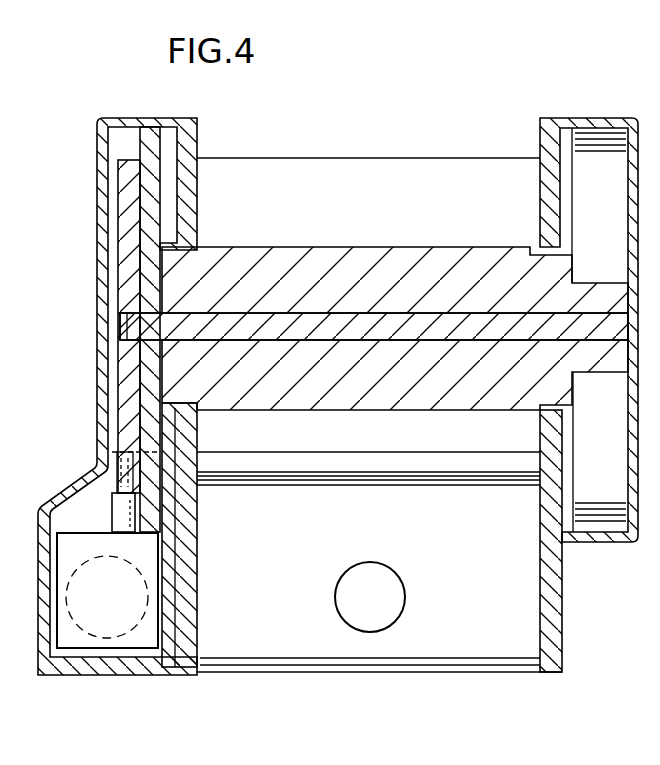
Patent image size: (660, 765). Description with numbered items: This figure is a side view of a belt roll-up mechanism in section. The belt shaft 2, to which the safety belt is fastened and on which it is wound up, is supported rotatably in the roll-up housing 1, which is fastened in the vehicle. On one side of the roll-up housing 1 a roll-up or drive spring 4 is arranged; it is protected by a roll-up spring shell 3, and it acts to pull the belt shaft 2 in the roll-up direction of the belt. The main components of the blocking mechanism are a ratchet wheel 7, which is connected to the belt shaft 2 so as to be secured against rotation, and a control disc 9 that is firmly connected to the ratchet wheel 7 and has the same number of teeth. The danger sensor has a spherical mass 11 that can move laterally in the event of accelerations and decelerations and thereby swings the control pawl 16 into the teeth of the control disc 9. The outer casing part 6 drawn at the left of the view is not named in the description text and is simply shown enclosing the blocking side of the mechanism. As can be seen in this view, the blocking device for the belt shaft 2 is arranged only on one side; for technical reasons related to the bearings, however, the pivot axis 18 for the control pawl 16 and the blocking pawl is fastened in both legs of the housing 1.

The roll-up housing 1 is at (478, 650).
The belt shaft 2 is at (295, 258).
The roll-up spring shell 3 is at (636, 148).
The roll-up spring 4 is at (598, 170).
The housing 6 is at (102, 221).
The ratchet wheel 7 is at (149, 138).
The control disc 9 is at (131, 168).
The spherical mass 11 is at (90, 637).
The control pawl 16 is at (112, 492).
The pivot axis 18 is at (115, 460).